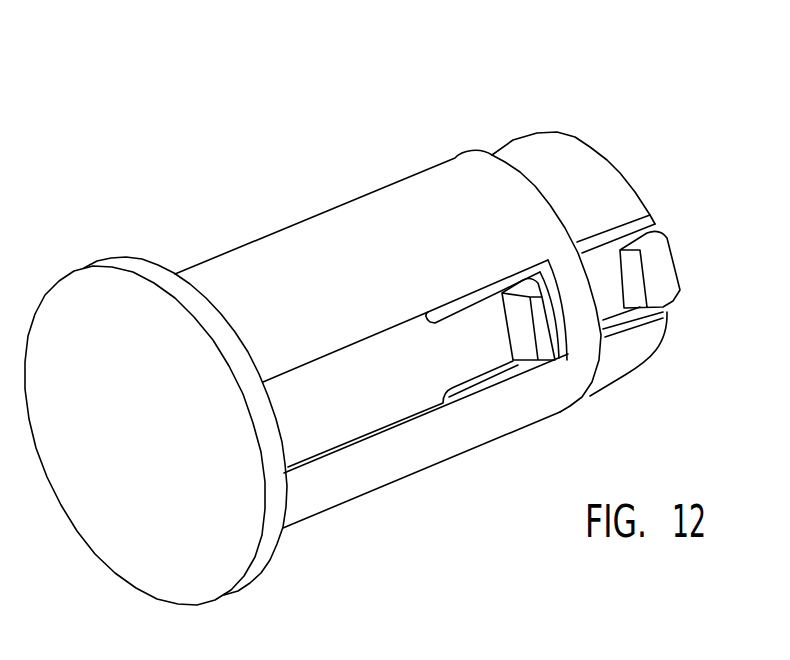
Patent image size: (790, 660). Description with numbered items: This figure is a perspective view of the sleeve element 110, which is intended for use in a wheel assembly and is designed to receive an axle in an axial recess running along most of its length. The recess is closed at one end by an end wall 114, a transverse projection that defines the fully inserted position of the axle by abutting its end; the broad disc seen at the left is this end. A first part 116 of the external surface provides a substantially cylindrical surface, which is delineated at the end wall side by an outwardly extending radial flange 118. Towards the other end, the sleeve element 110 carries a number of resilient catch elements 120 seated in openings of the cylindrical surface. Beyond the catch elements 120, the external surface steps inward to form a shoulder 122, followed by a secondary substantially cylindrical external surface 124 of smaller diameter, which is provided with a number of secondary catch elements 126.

The sleeve element 110 is at (604, 108).
The end wall 114 is at (124, 493).
The first part of the external surface 116 is at (322, 247).
The radial flange 118 is at (158, 275).
The resilient catch elements 120 is at (525, 342).
The shoulder 122 is at (589, 392).
The secondary substantially cylindrical external surface 124 is at (603, 180).
The secondary catch elements 126 is at (648, 280).